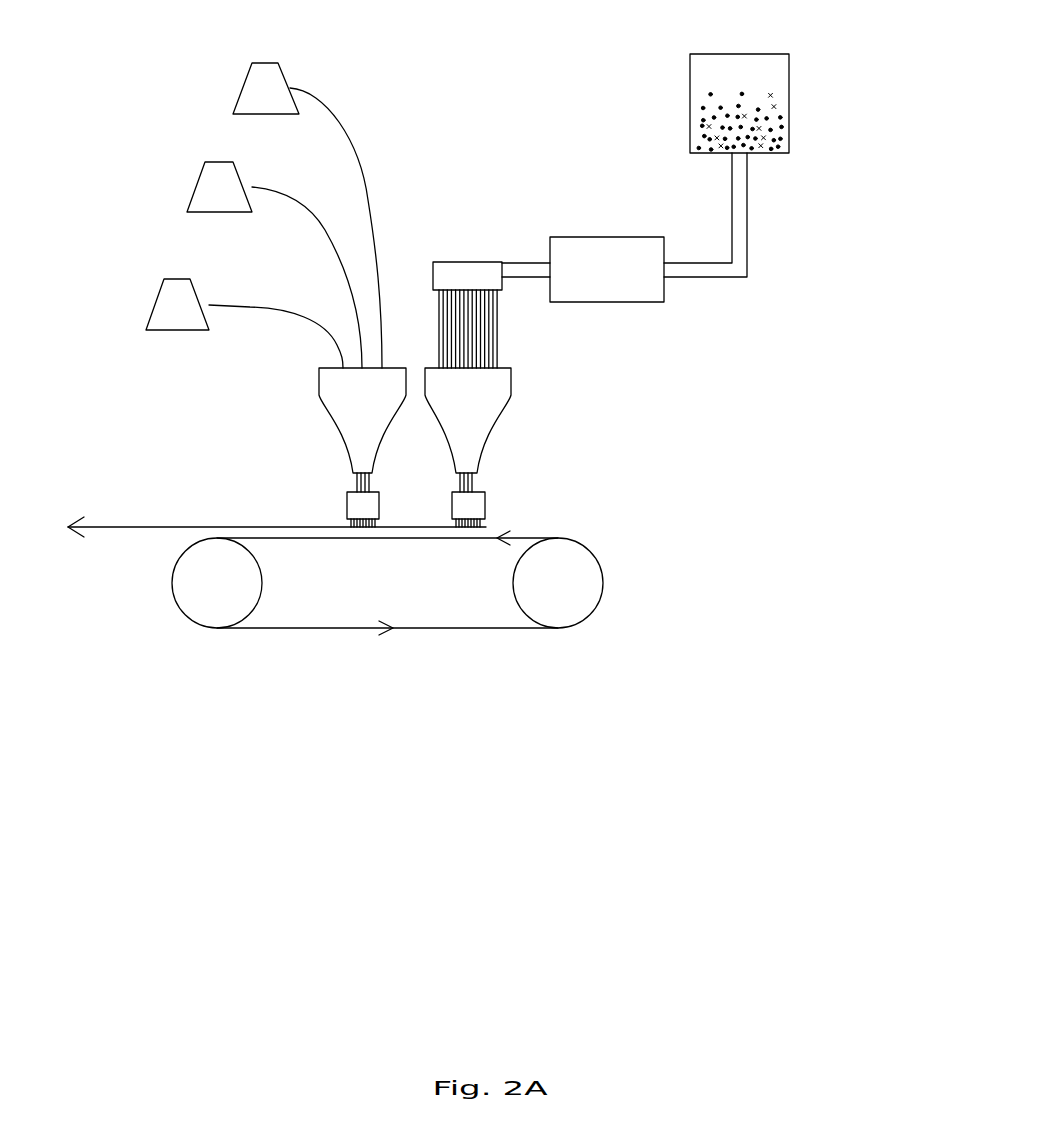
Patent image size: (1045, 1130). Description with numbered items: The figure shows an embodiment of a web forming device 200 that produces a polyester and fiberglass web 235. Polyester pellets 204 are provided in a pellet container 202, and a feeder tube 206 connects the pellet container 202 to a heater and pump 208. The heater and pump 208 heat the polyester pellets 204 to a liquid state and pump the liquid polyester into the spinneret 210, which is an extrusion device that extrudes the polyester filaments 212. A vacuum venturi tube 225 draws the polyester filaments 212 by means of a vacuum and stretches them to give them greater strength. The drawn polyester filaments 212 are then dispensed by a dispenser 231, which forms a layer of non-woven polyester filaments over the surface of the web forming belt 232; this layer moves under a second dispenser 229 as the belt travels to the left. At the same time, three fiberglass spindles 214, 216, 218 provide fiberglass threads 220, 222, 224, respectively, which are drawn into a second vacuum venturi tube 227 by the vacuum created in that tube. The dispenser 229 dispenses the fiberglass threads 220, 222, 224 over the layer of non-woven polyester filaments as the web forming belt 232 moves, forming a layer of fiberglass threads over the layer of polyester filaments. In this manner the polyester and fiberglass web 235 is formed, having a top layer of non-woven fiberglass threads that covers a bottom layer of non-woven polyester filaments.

The web forming device 200 is at (207, 684).
The pellet container 202 is at (790, 126).
The polyester pellets 204 is at (765, 98).
The feeder tube 206 is at (748, 236).
The heater and pump 208 is at (635, 293).
The spinneret 210 is at (460, 262).
The polyester filaments 212 is at (503, 312).
The fiberglass spindle 214 is at (243, 91).
The fiberglass spindle 216 is at (196, 180).
The fiberglass spindle 218 is at (157, 300).
The fiberglass thread 220 is at (335, 100).
The fiberglass thread 222 is at (313, 212).
The fiberglass thread 224 is at (259, 307).
The vacuum venturi tube 225 is at (480, 417).
The vacuum venturi tube 227 is at (350, 423).
The dispenser 229 is at (357, 507).
The dispenser 231 is at (474, 503).
The web forming belt 232 is at (497, 630).
The polyester and fiberglass web 235 is at (118, 527).